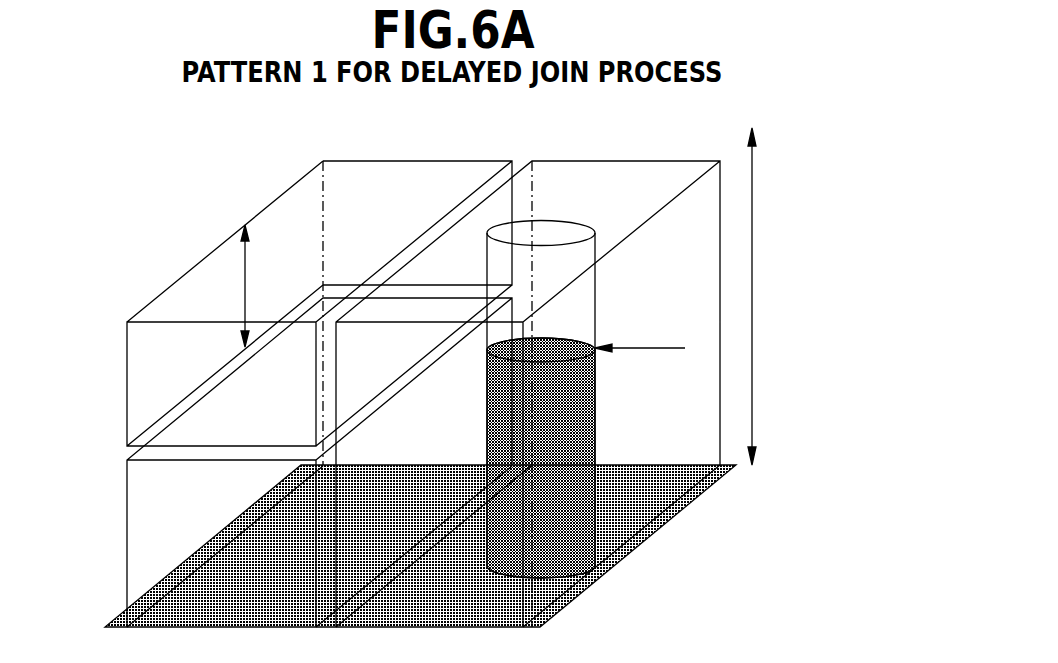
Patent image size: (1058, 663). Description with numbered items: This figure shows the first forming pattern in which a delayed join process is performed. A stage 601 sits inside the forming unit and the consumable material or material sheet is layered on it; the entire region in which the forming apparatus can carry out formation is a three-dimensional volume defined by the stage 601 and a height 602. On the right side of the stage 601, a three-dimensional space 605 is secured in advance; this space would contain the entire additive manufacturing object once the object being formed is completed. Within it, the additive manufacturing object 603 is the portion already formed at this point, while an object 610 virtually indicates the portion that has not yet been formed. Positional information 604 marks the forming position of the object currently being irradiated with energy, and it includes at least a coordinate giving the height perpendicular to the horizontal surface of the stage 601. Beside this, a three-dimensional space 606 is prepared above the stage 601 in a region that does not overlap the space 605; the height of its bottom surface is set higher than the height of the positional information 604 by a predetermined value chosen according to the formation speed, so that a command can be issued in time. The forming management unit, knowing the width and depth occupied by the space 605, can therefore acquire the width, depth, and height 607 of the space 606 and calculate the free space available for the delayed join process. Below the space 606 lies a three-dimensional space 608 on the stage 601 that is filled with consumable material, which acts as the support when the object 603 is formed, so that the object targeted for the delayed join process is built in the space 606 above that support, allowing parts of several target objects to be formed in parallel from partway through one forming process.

The stage 601 is at (572, 601).
The height 602 is at (754, 290).
The additive manufacturing object 603 is at (596, 427).
The positional information 604 is at (655, 347).
The three-dimensional space 605 is at (618, 180).
The three-dimensional space 606 is at (403, 178).
The height 607 is at (284, 262).
The three-dimensional space 608 is at (147, 507).
The object 610 is at (596, 283).